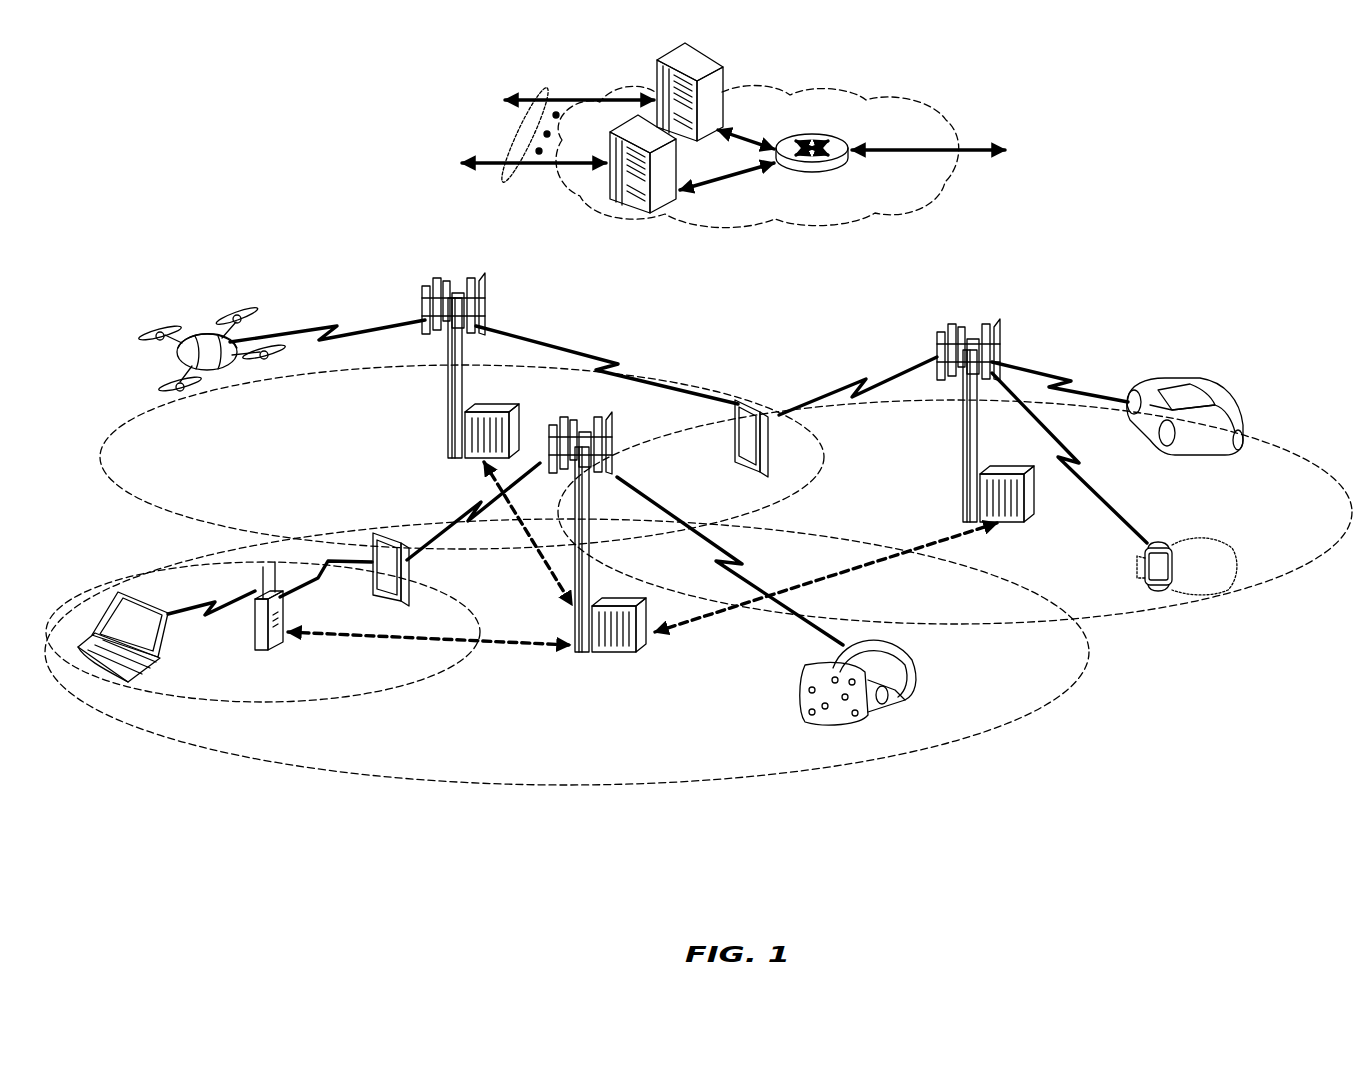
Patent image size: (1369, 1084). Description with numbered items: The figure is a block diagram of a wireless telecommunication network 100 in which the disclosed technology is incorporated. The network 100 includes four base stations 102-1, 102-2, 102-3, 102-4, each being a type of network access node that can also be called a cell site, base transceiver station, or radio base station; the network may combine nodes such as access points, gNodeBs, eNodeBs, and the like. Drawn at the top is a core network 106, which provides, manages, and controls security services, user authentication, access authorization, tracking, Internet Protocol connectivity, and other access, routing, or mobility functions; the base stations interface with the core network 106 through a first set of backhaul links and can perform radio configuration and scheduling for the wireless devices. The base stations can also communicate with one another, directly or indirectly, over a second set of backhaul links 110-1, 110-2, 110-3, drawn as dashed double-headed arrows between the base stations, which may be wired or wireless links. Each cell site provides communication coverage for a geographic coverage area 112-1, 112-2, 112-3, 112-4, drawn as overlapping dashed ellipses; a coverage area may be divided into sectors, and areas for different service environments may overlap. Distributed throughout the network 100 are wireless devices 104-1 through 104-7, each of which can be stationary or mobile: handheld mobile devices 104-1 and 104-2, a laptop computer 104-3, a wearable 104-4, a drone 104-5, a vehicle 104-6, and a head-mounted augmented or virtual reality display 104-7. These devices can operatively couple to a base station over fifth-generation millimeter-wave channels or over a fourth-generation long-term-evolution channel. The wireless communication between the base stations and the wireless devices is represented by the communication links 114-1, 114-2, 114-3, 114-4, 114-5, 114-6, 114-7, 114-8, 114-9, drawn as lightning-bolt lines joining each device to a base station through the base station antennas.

The wireless telecommunication network 100 is at (1254, 146).
The core network 106 is at (848, 222).
The base station 102-1 is at (580, 656).
The base station 102-2 is at (447, 405).
The base station 102-3 is at (962, 440).
The base station 102-4 is at (253, 643).
The wireless device 104-1 is at (410, 584).
The wireless device 104-2 is at (735, 440).
The wireless device 104-3 is at (100, 681).
The wireless device 104-4 is at (1160, 545).
The wireless device 104-5 is at (216, 372).
The wireless device 104-6 is at (1197, 388).
The wireless device 104-7 is at (925, 678).
The backhaul link 110-1 is at (326, 634).
The backhaul link 110-2 is at (898, 577).
The backhaul link 110-3 is at (548, 572).
The geographic coverage area 112-1 is at (512, 785).
The geographic coverage area 112-2 is at (386, 694).
The geographic coverage area 112-3 is at (162, 514).
The geographic coverage area 112-4 is at (1258, 447).
The communication link 114-1 is at (738, 568).
The communication link 114-2 is at (466, 516).
The communication link 114-3 is at (180, 614).
The communication link 114-4 is at (322, 588).
The communication link 114-5 is at (330, 328).
The communication link 114-6 is at (612, 362).
The communication link 114-7 is at (856, 380).
The communication link 114-8 is at (1078, 482).
The communication link 114-9 is at (1060, 377).